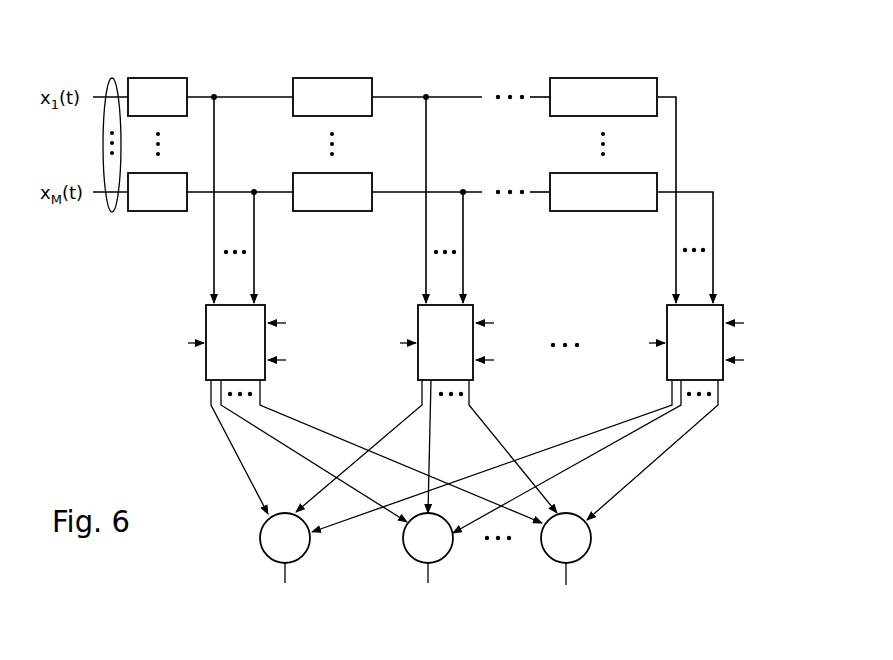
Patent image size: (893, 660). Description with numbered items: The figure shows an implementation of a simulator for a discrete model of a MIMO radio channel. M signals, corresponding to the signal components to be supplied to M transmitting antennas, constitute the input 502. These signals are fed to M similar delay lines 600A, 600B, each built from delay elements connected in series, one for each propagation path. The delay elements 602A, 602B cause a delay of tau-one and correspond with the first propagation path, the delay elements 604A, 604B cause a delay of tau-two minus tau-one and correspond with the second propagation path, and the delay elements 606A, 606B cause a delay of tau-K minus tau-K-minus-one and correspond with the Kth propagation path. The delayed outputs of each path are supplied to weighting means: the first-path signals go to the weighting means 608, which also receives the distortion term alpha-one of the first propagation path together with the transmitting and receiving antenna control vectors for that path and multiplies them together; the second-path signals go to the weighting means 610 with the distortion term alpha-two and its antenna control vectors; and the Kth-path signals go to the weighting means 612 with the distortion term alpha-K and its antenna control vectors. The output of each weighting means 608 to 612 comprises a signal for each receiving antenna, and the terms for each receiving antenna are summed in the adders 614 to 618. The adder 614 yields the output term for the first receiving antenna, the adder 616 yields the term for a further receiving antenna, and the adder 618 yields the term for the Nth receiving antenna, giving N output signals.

The input 502 is at (117, 213).
The delay line 600A is at (690, 98).
The delay line 600B is at (727, 187).
The delay element 602A is at (157, 78).
The delay element 602B is at (168, 212).
The delay element 604A is at (322, 78).
The delay element 604B is at (350, 212).
The delay element 606A is at (590, 78).
The delay element 606B is at (607, 212).
The weighting means 608 is at (206, 317).
The weighting means 610 is at (418, 318).
The weighting means 612 is at (667, 318).
The adder 614 is at (260, 536).
The adder 616 is at (403, 545).
The adder 618 is at (540, 546).